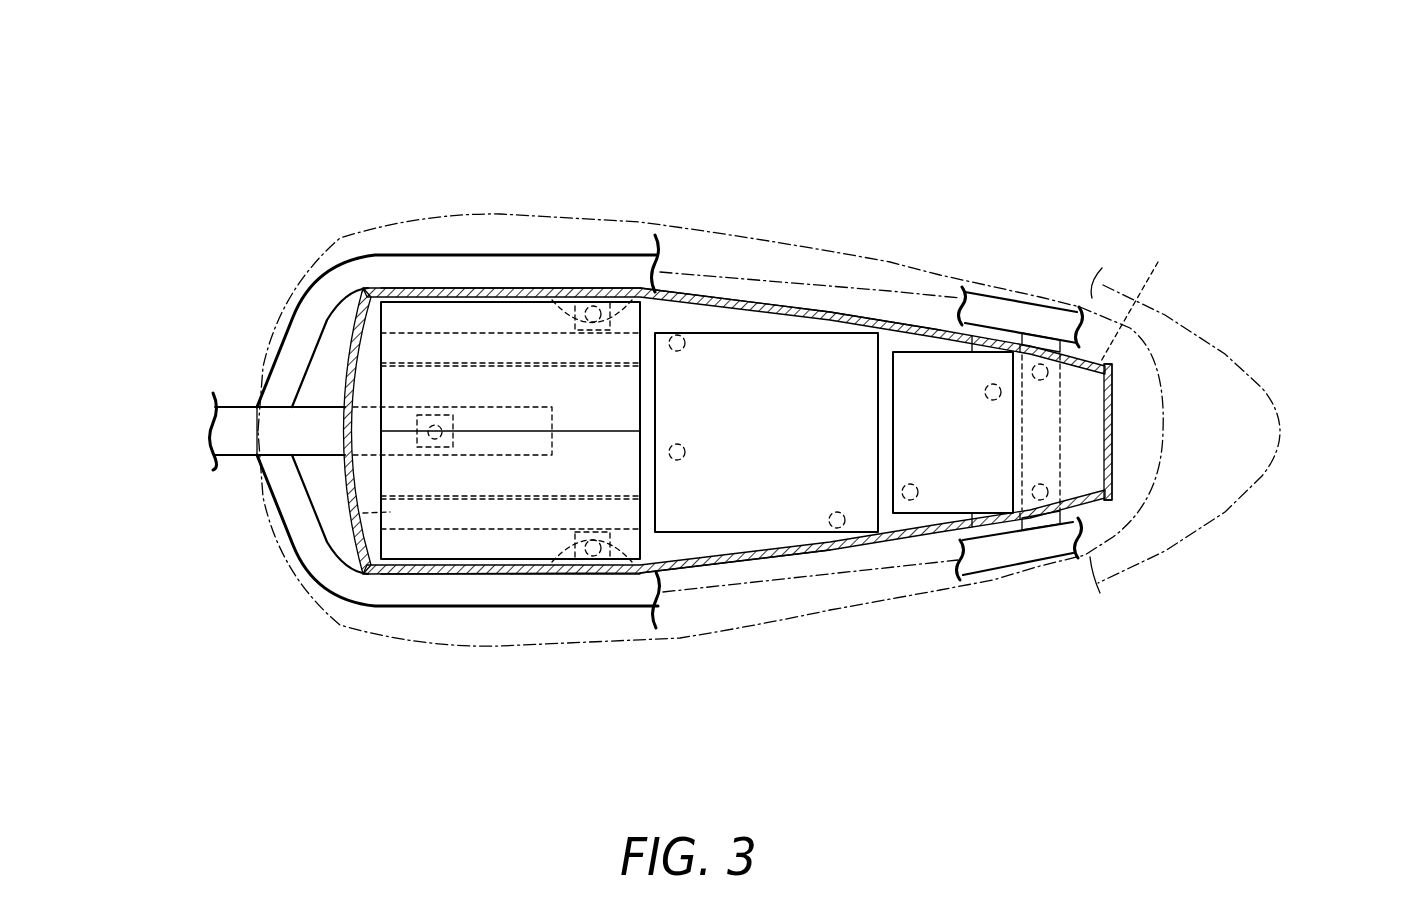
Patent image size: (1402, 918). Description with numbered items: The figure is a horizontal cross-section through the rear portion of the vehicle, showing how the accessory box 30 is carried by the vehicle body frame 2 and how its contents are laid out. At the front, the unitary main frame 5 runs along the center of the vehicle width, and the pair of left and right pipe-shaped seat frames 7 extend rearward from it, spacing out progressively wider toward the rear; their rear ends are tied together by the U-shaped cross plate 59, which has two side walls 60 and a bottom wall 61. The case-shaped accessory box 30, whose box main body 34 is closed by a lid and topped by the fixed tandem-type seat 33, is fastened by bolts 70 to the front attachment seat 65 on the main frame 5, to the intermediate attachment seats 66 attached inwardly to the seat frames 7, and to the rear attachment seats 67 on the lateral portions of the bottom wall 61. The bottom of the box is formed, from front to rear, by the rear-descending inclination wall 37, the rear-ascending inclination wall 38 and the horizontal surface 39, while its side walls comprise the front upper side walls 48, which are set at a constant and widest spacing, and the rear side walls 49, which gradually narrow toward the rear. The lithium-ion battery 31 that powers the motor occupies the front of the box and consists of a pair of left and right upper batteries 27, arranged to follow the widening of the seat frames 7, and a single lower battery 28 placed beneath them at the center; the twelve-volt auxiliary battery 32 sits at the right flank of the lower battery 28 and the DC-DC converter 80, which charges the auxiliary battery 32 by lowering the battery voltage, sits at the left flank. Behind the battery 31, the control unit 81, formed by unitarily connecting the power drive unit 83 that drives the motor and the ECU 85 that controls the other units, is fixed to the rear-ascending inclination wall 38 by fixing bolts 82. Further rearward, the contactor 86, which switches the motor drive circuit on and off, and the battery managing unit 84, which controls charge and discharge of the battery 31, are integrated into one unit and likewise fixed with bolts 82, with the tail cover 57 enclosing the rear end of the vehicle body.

The vehicle body frame 2 is at (588, 442).
The main frame 5 is at (243, 448).
The seat frame 7 is at (425, 270).
The upper battery 27 is at (382, 350).
The lower battery 28 is at (380, 383).
The accessory box 30 is at (728, 527).
The battery 31 is at (244, 417).
The auxiliary battery 32 is at (682, 290).
The seat 33 is at (921, 270).
The box main body 34 is at (775, 562).
The rear-descending inclination wall 37 is at (343, 467).
The rear-ascending inclination wall 38 is at (713, 543).
The horizontal surface 39 is at (1090, 487).
The front upper side wall 48 is at (512, 298).
The rear side wall 49 is at (837, 318).
The tail cover 57 is at (1278, 386).
The cross plate 59 is at (1065, 410).
The side wall 60 is at (1045, 340).
The bottom wall 61 is at (1047, 450).
The front attachment seat 65 is at (436, 440).
The intermediate attachment seat 66 is at (628, 303).
The rear attachment seat 67 is at (1102, 268).
The bolt 70 is at (420, 445).
The DC-DC converter 80 is at (363, 513).
The control unit 81 is at (782, 318).
The fixing bolt 82 is at (700, 337).
The power drive unit 83 is at (782, 318).
The battery managing unit 84 is at (963, 345).
The ECU 85 is at (787, 360).
The contactor 86 is at (940, 380).